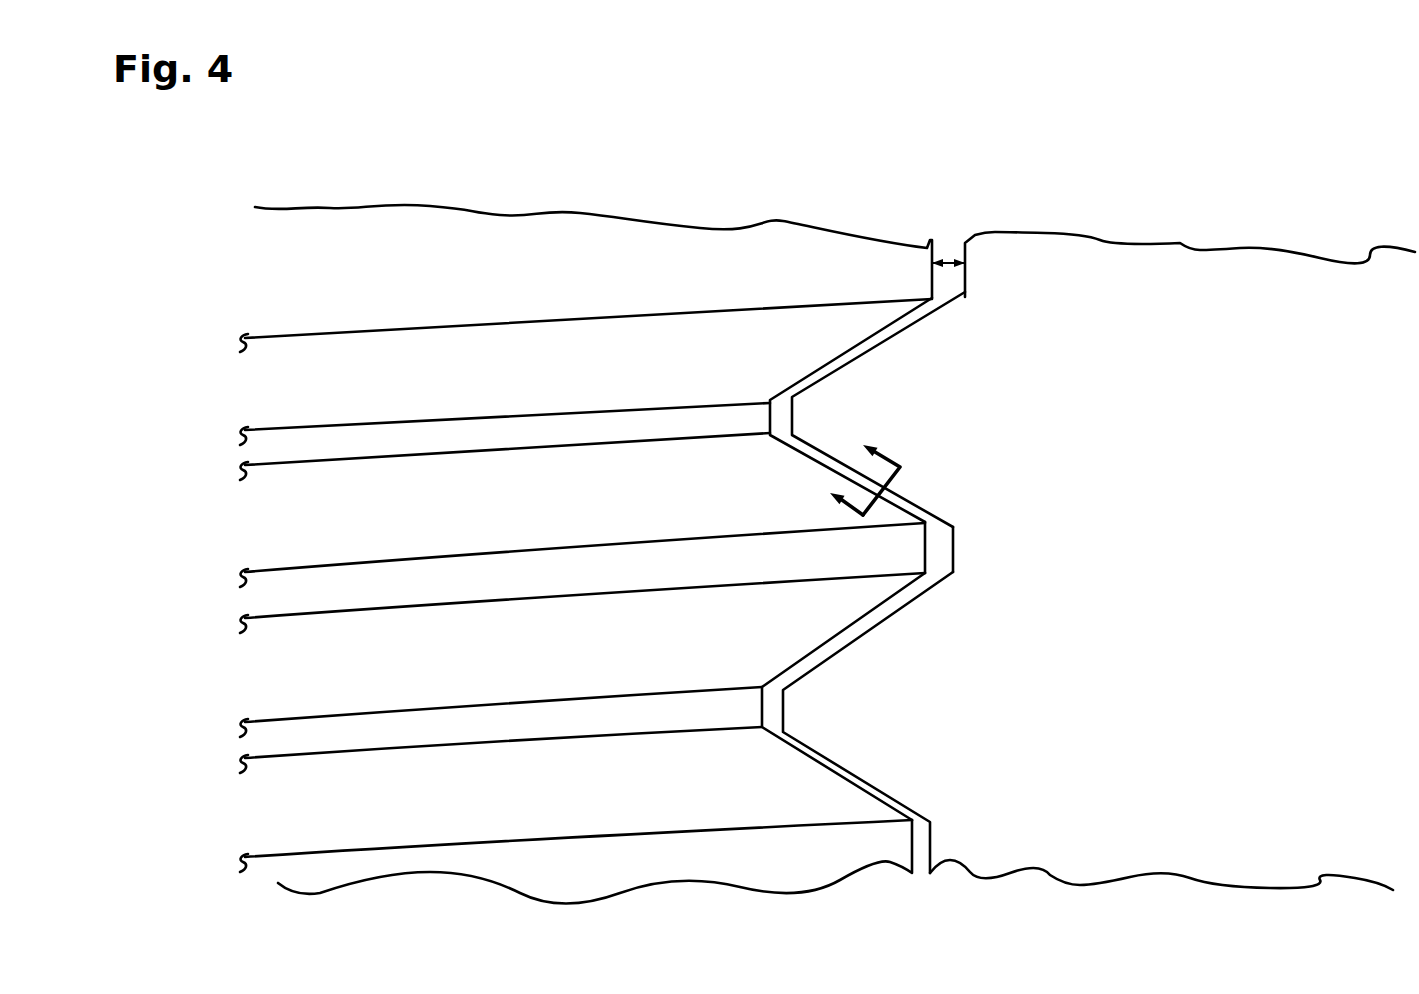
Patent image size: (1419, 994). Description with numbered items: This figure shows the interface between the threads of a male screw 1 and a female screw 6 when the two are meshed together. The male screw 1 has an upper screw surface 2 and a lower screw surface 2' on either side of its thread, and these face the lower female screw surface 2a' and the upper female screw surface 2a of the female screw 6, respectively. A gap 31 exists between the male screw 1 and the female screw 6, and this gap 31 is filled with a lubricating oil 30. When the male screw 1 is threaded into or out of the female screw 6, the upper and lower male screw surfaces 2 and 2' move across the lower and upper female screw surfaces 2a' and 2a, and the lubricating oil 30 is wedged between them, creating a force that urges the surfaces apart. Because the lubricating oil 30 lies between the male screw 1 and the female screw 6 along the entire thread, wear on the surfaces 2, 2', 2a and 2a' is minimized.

The male screw 1 is at (458, 280).
The female screw 6 is at (1008, 386).
The upper screw surface 2 is at (843, 410).
The lower screw surface 2' is at (843, 696).
The upper female screw surface 2a is at (868, 722).
The lower female screw surface 2a' is at (878, 409).
The lubricating oil 30 is at (940, 548).
The gap 31 is at (949, 250).